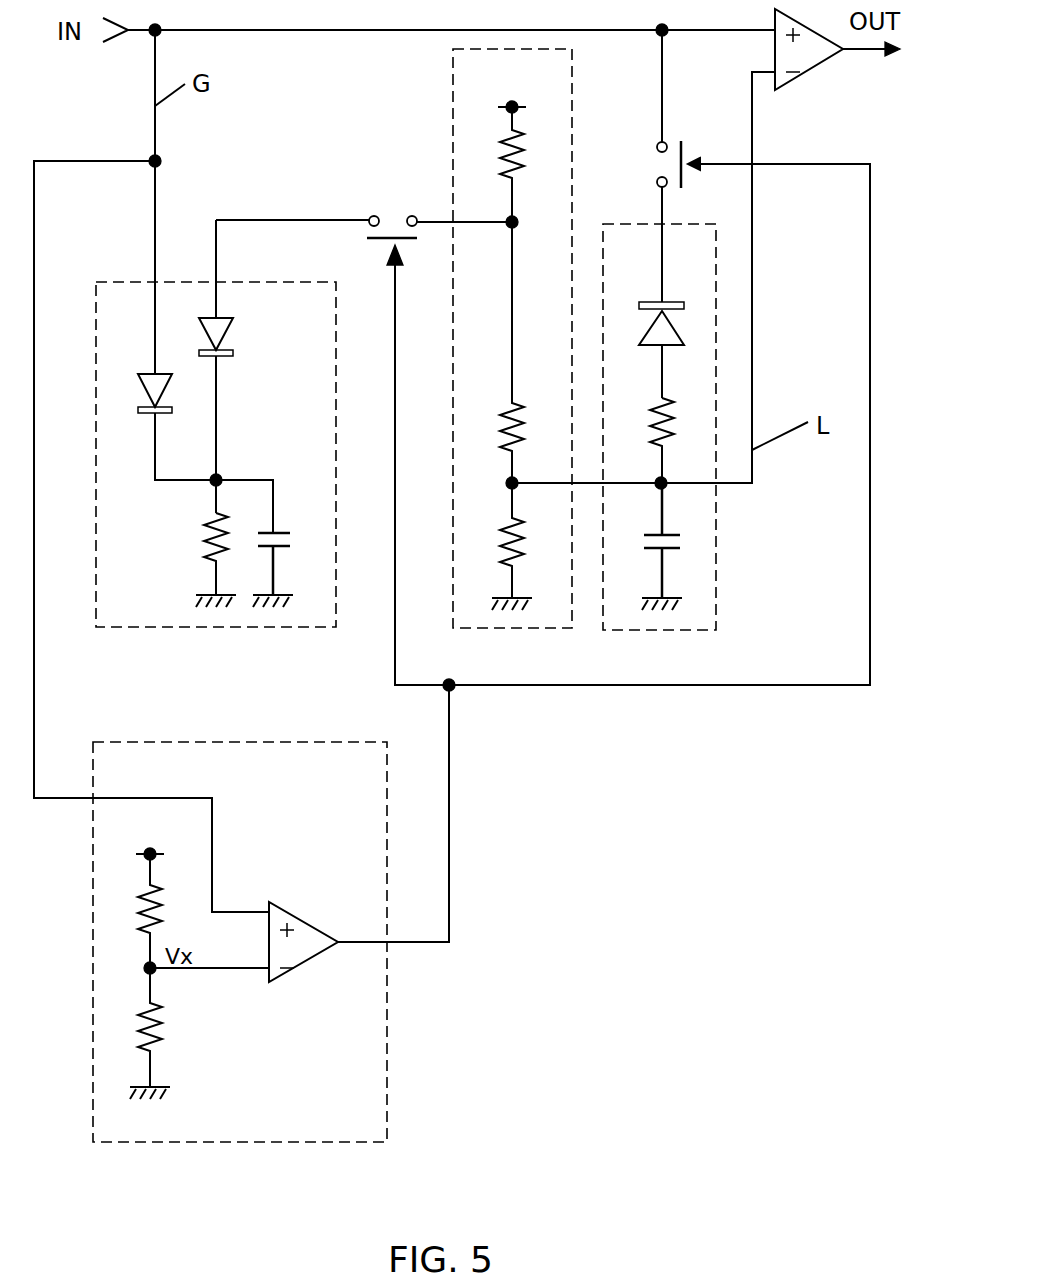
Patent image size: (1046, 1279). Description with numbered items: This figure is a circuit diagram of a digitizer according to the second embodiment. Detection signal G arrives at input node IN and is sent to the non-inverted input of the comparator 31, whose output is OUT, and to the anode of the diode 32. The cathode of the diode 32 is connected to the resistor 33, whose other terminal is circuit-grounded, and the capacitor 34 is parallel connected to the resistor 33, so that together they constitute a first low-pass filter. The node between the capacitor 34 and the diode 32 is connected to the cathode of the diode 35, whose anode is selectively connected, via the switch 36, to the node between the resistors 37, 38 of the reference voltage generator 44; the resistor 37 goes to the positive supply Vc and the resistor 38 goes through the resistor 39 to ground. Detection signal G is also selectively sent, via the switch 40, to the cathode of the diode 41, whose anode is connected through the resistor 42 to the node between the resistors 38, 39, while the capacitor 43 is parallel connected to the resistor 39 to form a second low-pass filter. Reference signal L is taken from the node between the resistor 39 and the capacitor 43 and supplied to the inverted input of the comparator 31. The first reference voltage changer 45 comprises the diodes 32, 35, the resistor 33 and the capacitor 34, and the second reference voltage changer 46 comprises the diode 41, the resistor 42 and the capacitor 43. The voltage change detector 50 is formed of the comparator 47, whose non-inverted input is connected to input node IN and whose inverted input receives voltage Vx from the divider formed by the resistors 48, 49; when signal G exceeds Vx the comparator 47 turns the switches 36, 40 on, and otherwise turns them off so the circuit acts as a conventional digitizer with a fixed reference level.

The comparator 31 is at (808, 60).
The diode 32 is at (140, 397).
The resistor 33 is at (203, 524).
The capacitor 34 is at (292, 538).
The diode 35 is at (229, 337).
The switch 36 is at (394, 214).
The resistor 37 is at (499, 170).
The resistor 38 is at (498, 410).
The resistor 39 is at (498, 526).
The switch 40 is at (656, 182).
The diode 41 is at (640, 328).
The resistor 42 is at (648, 406).
The capacitor 43 is at (648, 536).
The reference voltage generator 44 is at (503, 630).
The first reference voltage changer 45 is at (225, 628).
The second reference voltage changer 46 is at (678, 630).
The comparator 47 is at (302, 936).
The resistor 48 is at (138, 894).
The resistor 49 is at (138, 1012).
The voltage change detector 50 is at (357, 1107).